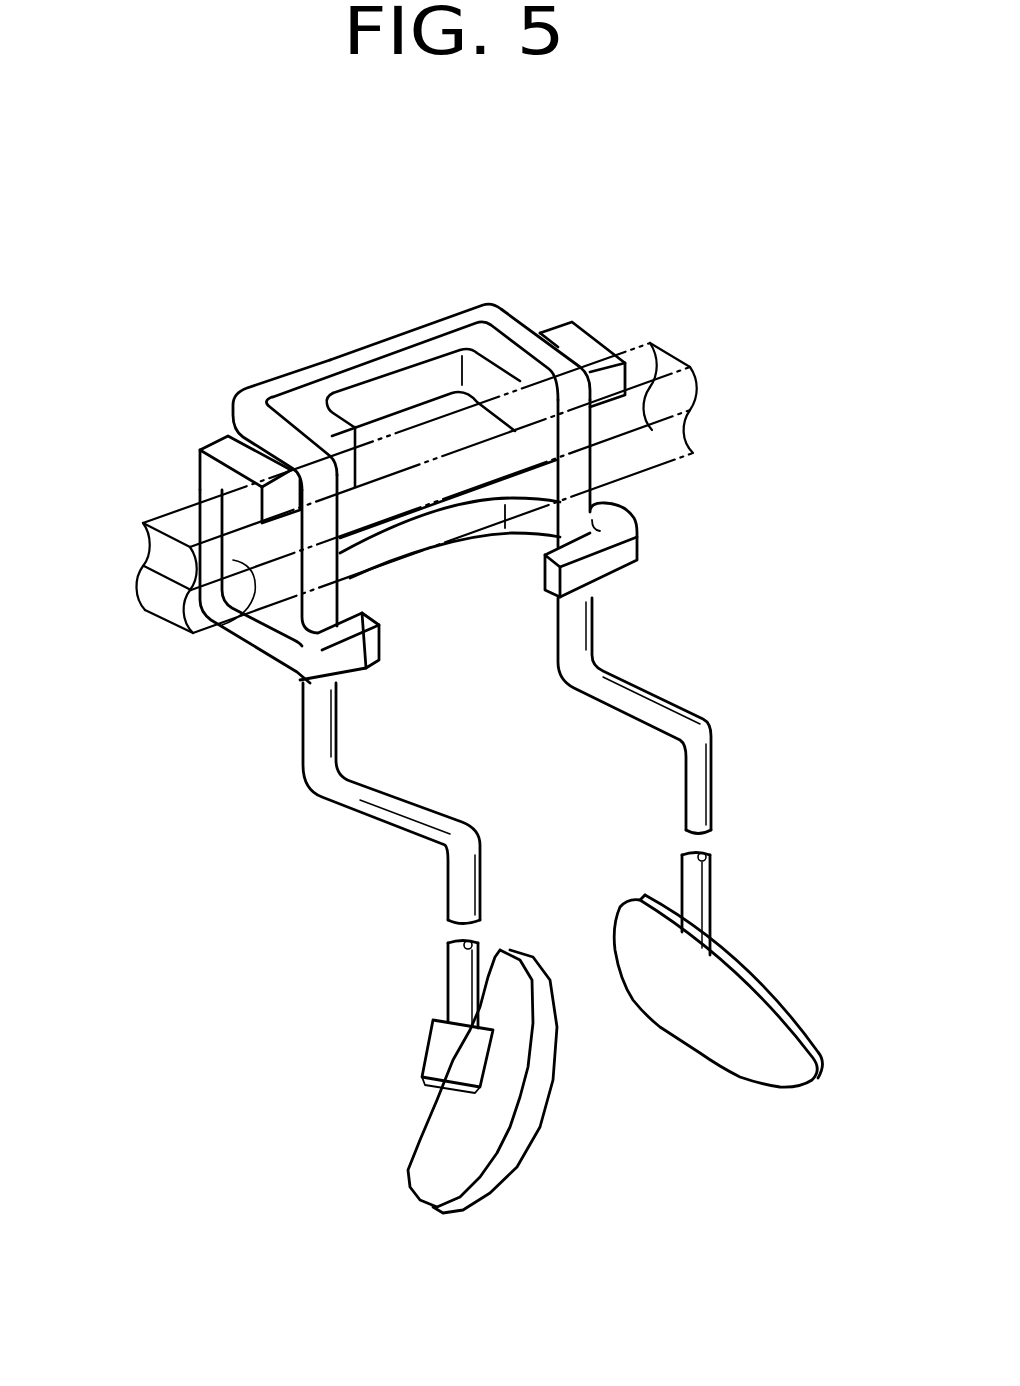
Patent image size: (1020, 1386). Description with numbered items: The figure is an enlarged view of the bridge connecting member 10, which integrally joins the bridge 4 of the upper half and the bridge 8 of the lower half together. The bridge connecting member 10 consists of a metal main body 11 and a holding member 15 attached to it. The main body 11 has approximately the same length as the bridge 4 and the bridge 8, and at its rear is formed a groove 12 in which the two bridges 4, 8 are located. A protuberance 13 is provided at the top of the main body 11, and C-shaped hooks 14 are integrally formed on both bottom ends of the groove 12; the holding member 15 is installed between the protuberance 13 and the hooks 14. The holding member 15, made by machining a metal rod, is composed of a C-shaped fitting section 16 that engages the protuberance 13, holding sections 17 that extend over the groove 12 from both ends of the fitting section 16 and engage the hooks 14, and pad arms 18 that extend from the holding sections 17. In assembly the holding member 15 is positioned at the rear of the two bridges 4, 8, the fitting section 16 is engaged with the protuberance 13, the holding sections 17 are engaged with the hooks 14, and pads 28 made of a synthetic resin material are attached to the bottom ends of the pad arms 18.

The bridge 4 is at (690, 383).
The bridge 8 is at (697, 438).
The bridge connecting member 10 is at (490, 300).
The main body 11 is at (180, 459).
The groove 12 is at (262, 610).
The protuberance 13 is at (316, 387).
The C-shaped hook 14 is at (570, 577).
The holding member 15 is at (268, 752).
The C-shaped fitting section 16 is at (243, 407).
The holding section 17 is at (590, 472).
The pad arm 18 is at (650, 704).
The pad 28 is at (482, 1180).